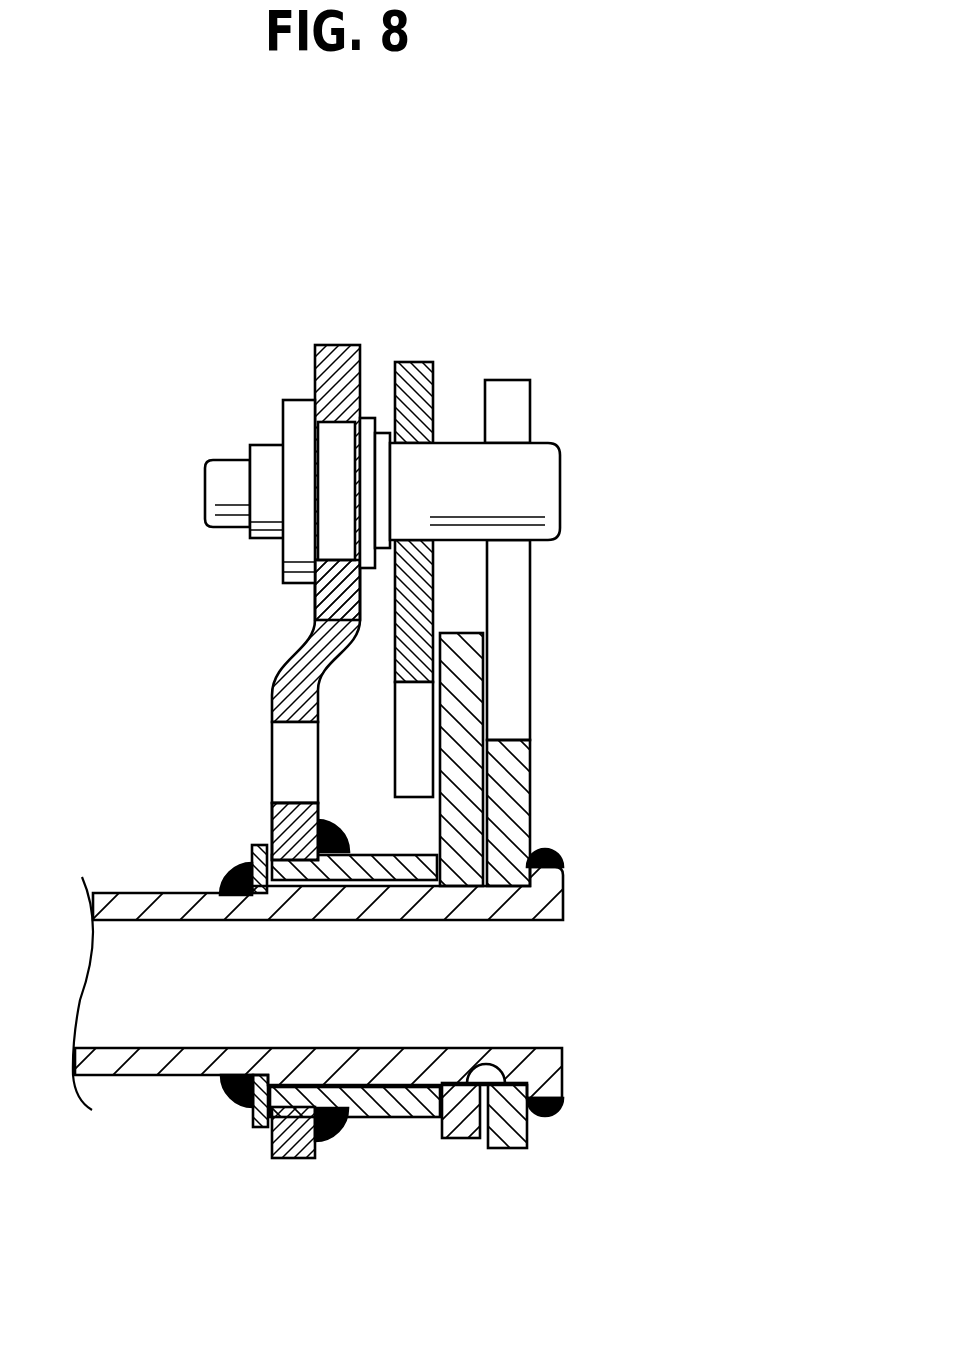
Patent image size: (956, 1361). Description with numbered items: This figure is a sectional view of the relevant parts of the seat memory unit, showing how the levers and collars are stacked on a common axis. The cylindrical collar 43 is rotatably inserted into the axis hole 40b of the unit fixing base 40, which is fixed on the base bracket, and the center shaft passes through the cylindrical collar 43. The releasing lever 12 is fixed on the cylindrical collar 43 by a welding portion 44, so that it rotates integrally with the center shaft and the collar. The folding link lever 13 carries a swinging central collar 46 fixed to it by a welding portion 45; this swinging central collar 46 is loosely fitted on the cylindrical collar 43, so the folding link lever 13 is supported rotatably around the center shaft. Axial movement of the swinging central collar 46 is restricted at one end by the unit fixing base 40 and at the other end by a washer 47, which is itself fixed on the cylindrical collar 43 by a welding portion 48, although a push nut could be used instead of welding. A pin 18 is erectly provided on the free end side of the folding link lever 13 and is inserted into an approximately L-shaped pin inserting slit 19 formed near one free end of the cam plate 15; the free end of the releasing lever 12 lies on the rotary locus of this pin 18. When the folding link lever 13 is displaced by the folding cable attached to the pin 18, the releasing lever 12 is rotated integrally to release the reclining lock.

The releasing lever 12 is at (505, 380).
The folding link lever 13 is at (328, 345).
The cam plate 15 is at (402, 362).
The pin 18 is at (543, 492).
The pin inserting slit 19 is at (435, 435).
The unit fixing base 40 is at (462, 1122).
The axis hole 40b is at (505, 1105).
The cylindrical collar 43 is at (138, 1063).
The welding portion 44 is at (553, 1120).
The welding portion 45 is at (340, 1142).
The swinging central collar 46 is at (397, 1102).
The washer 47 is at (253, 1127).
The welding portion 48 is at (225, 1105).